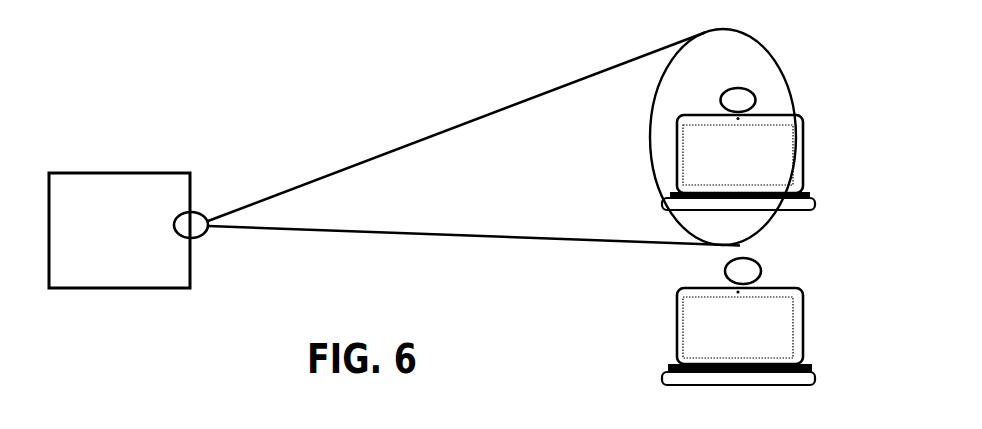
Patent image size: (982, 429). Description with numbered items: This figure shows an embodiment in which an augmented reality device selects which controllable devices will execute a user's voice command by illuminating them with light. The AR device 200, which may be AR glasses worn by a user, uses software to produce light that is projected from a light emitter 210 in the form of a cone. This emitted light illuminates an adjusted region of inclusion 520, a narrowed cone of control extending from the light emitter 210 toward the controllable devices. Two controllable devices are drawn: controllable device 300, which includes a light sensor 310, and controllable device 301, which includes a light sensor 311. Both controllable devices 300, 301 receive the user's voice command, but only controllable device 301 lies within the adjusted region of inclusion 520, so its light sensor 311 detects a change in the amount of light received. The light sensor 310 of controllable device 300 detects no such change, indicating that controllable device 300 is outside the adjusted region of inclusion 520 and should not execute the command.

The AR device 200 is at (122, 172).
The light emitter 210 is at (203, 215).
The adjusted region of inclusion 520 is at (395, 148).
The controllable device 300 is at (803, 312).
The controllable device 301 is at (793, 117).
The light sensor 310 is at (756, 267).
The light sensor 311 is at (741, 87).